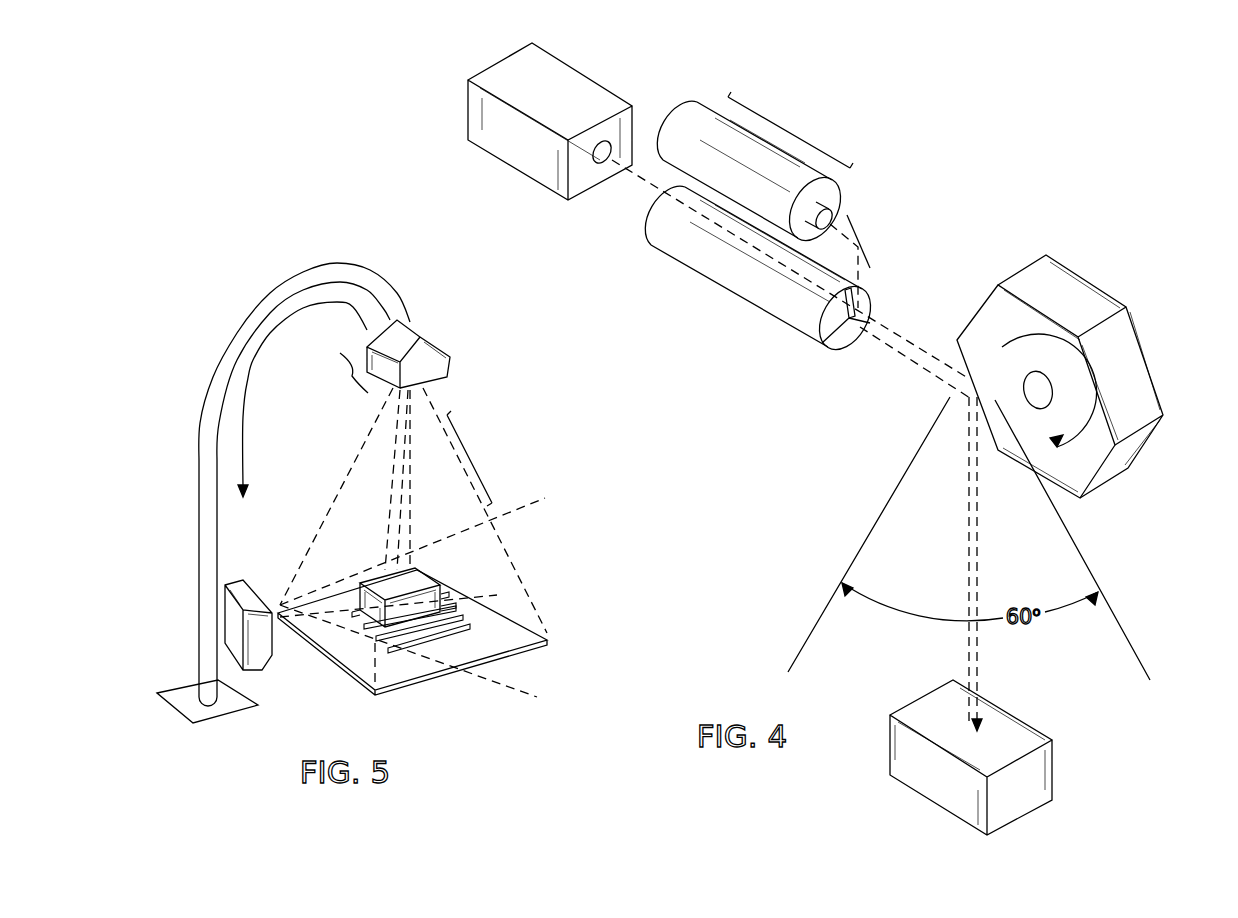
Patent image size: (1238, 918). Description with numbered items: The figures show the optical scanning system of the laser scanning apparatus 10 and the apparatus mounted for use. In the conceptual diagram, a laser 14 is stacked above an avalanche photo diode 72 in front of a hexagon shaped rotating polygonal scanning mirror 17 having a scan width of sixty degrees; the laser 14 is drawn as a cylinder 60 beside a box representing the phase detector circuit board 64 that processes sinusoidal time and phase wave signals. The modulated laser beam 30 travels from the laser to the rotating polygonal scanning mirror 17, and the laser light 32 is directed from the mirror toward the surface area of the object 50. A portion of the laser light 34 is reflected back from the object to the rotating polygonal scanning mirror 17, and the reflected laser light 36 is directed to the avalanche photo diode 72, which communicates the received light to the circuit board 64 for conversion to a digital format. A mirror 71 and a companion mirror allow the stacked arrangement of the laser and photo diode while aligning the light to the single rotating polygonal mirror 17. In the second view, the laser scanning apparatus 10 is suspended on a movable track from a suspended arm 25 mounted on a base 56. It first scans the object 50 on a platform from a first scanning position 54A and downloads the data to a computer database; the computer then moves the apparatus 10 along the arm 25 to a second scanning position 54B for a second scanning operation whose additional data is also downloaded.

In FIG. 4, the phase detector circuit board 64 is at (602, 140).
In FIG. 4, the first cylinder 60 is at (700, 110).
In FIG. 4, the laser 14 is at (790, 130).
In FIG. 4, the mirror 71 is at (852, 221).
In FIG. 4, the avalanche photo diode 72 is at (837, 353).
In FIG. 4, the laser beam 30 is at (927, 347).
In FIG. 5, the laser beam 30 is at (413, 510).
In FIG. 4, the reflected laser light 36 is at (913, 363).
In FIG. 4, the rotating polygonal scanning mirror 17 is at (1143, 337).
In FIG. 4, the reflected laser light portion 34 is at (967, 535).
In FIG. 4, the laser light 32 is at (979, 543).
In FIG. 4, the object 50 is at (1053, 773).
In FIG. 5, the object 50 is at (441, 585).
In FIG. 5, the suspended arm 25 is at (250, 327).
In FIG. 5, the laser scanning apparatus 10 is at (453, 339).
In FIG. 5, the first scanning position 54A is at (336, 373).
In FIG. 5, the second scanner 54B is at (278, 596).
In FIG. 5, the base 56 is at (168, 707).